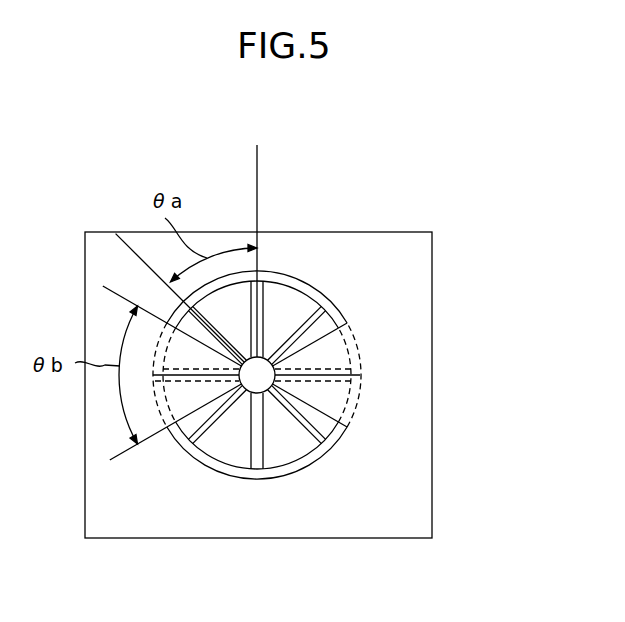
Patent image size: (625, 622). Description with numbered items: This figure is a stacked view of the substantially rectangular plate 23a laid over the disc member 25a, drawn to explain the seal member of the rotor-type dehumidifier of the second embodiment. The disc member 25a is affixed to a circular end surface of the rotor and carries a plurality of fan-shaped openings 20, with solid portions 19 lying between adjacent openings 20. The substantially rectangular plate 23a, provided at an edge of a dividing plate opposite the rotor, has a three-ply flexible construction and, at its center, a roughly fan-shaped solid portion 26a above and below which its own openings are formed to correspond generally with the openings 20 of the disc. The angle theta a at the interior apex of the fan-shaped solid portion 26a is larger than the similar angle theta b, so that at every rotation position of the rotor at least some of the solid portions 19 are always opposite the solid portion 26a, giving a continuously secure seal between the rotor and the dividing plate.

The solid portion 19 is at (330, 299).
The opening 20 is at (294, 283).
The substantially rectangular plate 23a is at (390, 242).
The disc member 25a is at (262, 452).
The fan-shaped solid portion 26a is at (330, 397).